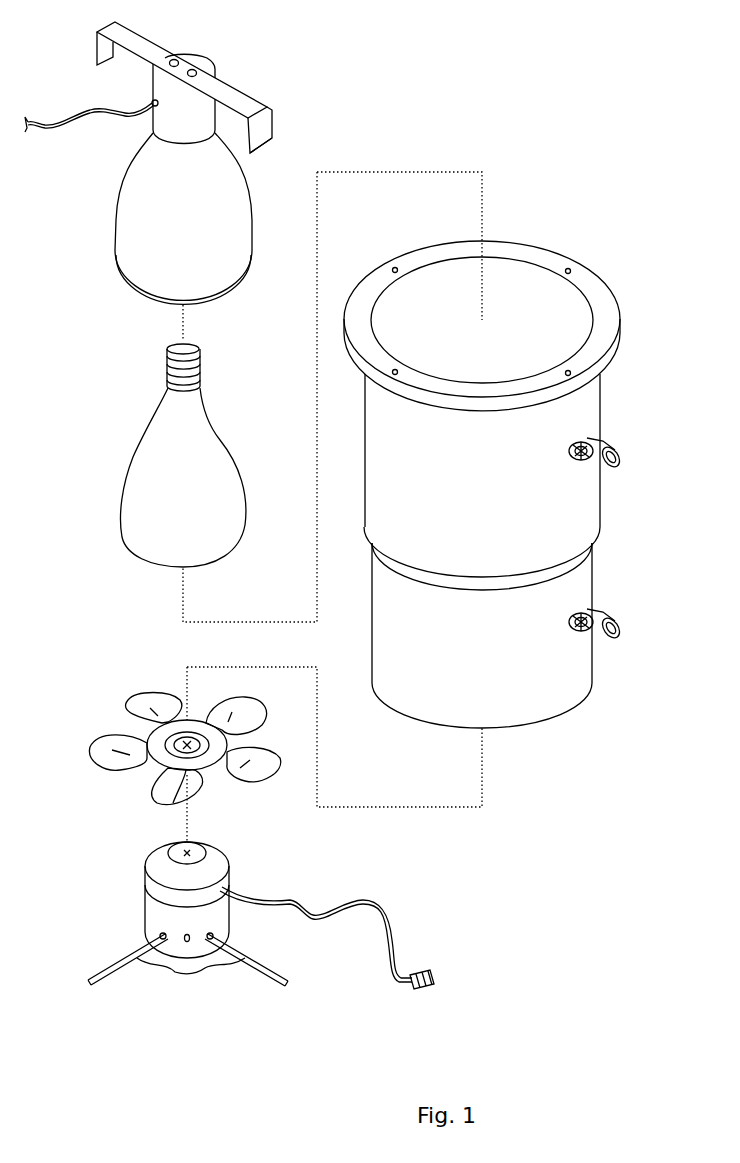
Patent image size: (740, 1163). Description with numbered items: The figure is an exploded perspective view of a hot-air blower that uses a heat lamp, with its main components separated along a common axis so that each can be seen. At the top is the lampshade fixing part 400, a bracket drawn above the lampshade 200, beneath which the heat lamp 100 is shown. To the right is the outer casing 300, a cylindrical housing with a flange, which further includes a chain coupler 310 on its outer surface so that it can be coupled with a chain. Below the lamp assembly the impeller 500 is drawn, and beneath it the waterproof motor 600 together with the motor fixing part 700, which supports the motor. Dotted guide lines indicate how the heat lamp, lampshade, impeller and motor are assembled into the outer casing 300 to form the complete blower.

The heat lamp 100 is at (159, 430).
The lampshade 200 is at (133, 181).
The outer casing 300 is at (537, 258).
The chain coupler 310 is at (593, 636).
The lampshade fixing part 400 is at (218, 87).
The impeller 500 is at (134, 709).
The waterproof motor 600 is at (160, 875).
The motor fixing part 700 is at (187, 967).